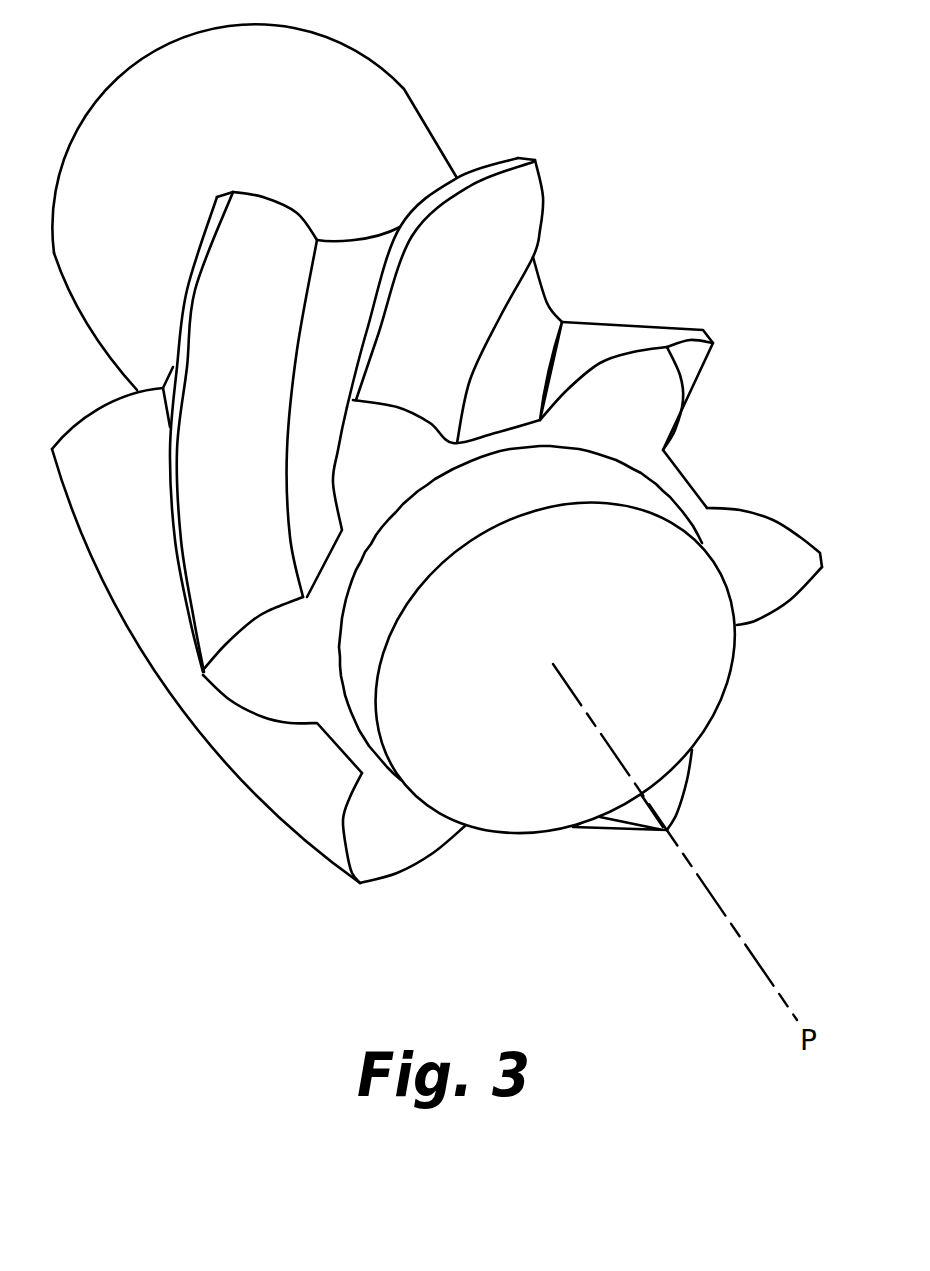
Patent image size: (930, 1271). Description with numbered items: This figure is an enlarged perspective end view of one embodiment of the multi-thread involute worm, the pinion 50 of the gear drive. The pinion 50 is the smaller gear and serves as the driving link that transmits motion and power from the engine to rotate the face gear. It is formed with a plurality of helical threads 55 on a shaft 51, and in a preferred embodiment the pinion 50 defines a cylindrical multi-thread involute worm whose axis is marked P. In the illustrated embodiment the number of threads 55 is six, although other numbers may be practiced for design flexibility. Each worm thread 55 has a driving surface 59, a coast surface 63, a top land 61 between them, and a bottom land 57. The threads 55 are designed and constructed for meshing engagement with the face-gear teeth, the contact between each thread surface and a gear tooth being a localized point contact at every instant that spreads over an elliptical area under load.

The pinion 50 is at (290, 658).
The shaft 51 is at (602, 723).
The helical threads 55 is at (228, 328).
The bottom land 57 is at (512, 343).
The driving surface 59 is at (472, 268).
The top land 61 is at (515, 157).
The coast surface 63 is at (435, 220).